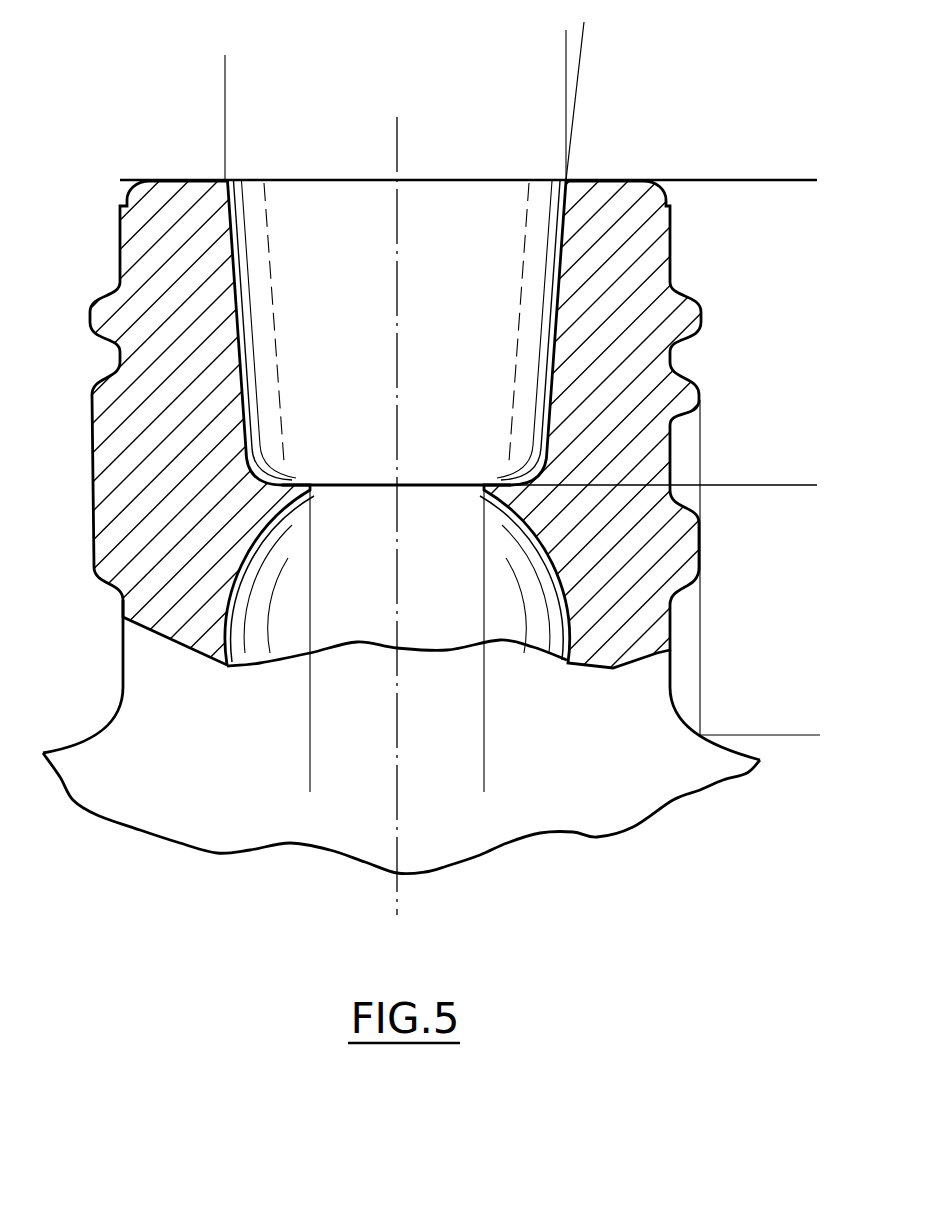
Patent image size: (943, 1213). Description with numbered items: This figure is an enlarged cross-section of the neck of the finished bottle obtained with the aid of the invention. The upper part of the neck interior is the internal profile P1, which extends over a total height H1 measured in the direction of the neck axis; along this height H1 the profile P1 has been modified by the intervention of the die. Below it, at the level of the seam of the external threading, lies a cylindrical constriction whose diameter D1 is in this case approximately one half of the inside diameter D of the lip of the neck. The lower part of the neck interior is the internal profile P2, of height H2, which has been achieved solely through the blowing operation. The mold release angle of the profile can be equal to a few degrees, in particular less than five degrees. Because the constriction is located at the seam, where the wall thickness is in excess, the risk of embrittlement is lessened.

The inside diameter of the lip D is at (566, 67).
The diameter of the cylindrical constriction D1 is at (484, 780).
The total height of the internal profile P1 H1 is at (807, 180).
The height of the internal profile P2 H2 is at (807, 485).
The internal profile of the neck P1 is at (540, 312).
The internal profile P2 is at (556, 614).